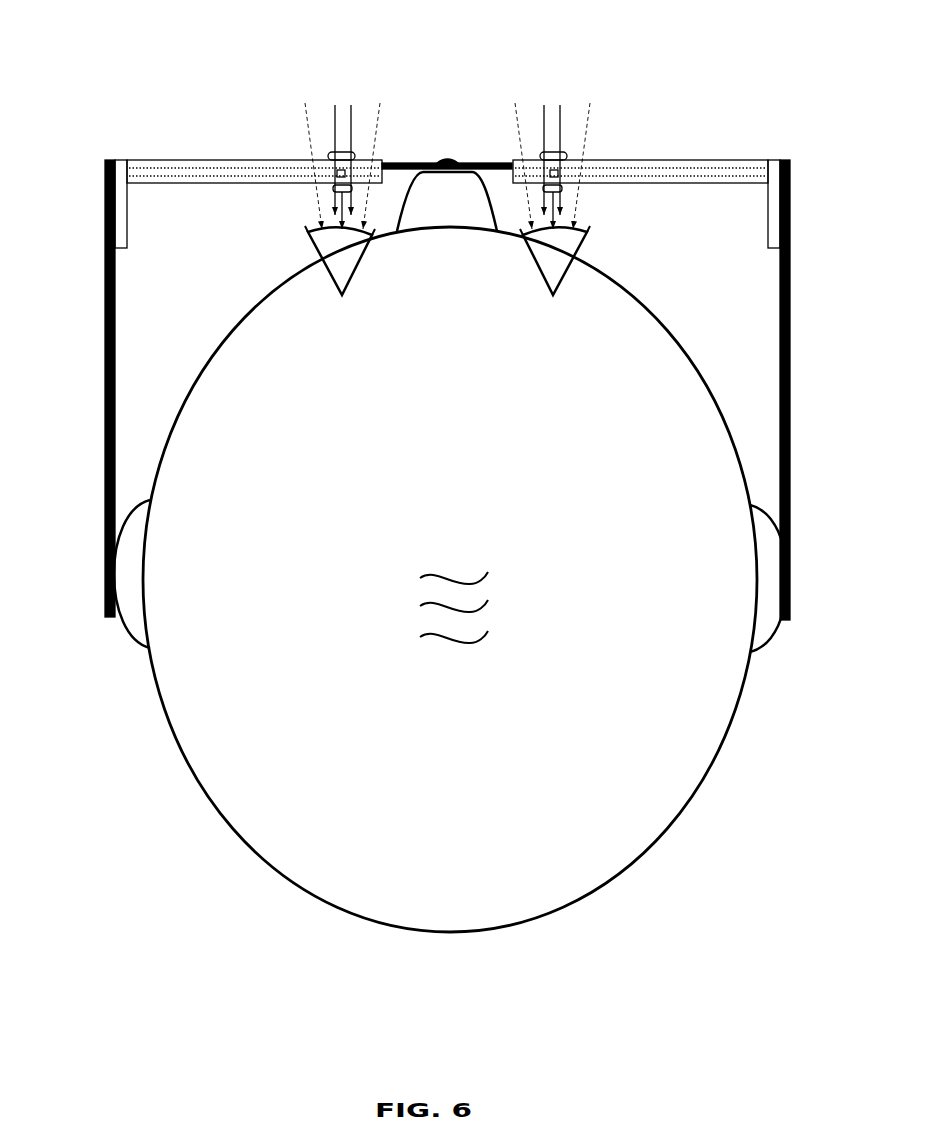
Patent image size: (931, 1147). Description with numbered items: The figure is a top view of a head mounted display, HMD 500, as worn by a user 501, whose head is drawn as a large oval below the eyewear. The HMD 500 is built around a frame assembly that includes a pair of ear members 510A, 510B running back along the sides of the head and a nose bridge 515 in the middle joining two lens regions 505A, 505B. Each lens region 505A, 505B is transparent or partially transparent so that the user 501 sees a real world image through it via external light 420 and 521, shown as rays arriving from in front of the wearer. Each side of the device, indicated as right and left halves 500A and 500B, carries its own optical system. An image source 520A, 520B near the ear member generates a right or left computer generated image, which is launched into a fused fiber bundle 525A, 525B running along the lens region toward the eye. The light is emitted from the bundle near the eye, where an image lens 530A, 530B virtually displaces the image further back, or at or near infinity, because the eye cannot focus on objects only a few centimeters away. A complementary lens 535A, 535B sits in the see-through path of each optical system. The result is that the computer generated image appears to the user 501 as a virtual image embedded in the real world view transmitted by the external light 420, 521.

The HMD 500 is at (80, 58).
The right arm assembly 500A is at (675, 115).
The left arm assembly 500B is at (222, 115).
The user 501 is at (462, 786).
The lens region 505A is at (648, 183).
The lens region 505B is at (248, 183).
The ear member 510A is at (790, 390).
The ear member 510B is at (107, 390).
The nose bridge 515 is at (492, 163).
The image source 520A is at (768, 245).
The image source 520B is at (128, 231).
The fused fiber bundle 525A is at (723, 167).
The fused fiber bundle 525B is at (162, 168).
The image lens 530A is at (587, 231).
The image lens 530B is at (308, 231).
The complementary lens 535A is at (563, 157).
The complementary lens 535B is at (338, 152).
The external light 420 is at (350, 107).
The external light 521 is at (377, 127).